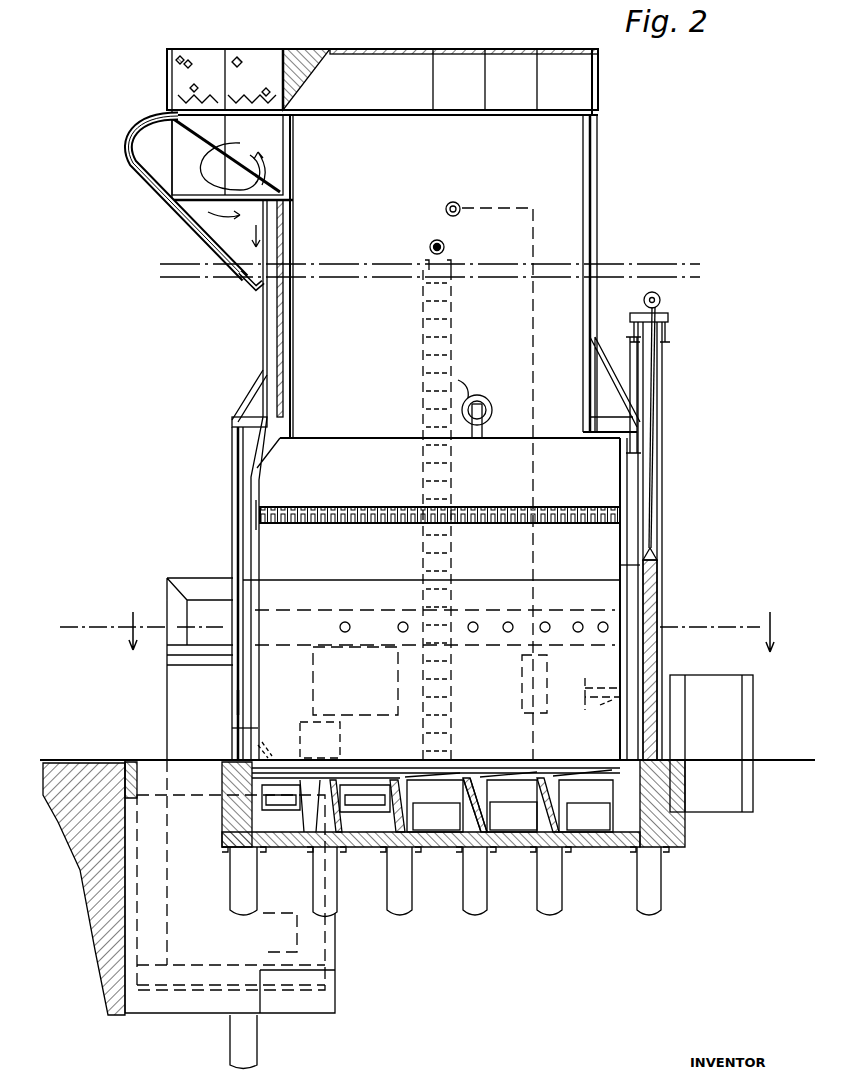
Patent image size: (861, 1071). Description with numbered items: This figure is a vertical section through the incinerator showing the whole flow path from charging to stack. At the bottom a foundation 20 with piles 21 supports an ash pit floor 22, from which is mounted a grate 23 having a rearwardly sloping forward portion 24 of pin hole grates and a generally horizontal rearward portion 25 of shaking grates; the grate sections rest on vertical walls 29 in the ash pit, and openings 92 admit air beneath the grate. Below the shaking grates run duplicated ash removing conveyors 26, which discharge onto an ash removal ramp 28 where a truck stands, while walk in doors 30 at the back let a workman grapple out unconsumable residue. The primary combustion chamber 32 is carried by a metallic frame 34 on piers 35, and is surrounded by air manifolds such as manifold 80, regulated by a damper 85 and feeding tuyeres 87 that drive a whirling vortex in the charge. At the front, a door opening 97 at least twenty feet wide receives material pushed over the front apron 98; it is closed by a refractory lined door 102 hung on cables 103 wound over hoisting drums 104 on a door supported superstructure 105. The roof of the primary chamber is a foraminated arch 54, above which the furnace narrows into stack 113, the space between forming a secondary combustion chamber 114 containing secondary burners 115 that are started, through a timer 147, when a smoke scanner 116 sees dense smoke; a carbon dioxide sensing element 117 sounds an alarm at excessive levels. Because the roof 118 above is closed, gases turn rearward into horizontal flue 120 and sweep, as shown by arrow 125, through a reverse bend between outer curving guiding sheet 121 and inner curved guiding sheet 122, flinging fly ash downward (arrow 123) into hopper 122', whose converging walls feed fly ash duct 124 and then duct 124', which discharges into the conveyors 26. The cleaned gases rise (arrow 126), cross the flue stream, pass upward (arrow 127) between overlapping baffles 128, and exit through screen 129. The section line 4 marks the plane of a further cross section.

The roof 118 is at (572, 88).
The baffles 128 is at (197, 79).
The arrow 127 is at (252, 80).
The screen 129 is at (196, 30).
The arrow 126 is at (267, 172).
The horizontal flue 120 is at (290, 155).
The arrow 123 is at (260, 235).
The arrow 125 is at (240, 228).
The outer curving guiding sheet 121 is at (150, 170).
The inner curved guiding sheet 122 is at (158, 197).
The hopper 122' is at (224, 292).
The section line 4- 4 is at (424, 622).
The stack 113 is at (296, 390).
The fly ash duct 124 is at (230, 480).
The duct 124' is at (213, 515).
The carbon dioxide sensing element 117 is at (459, 205).
The smoke scanner 116 is at (444, 244).
The secondary burners 115 is at (490, 412).
The cables 103 is at (652, 474).
The hoisting drums 104 is at (660, 298).
The door supported superstructure 105 is at (666, 320).
The refractory lined door 102 is at (652, 593).
The secondary combustion chamber 114 is at (435, 599).
The foraminated arch 54 is at (505, 507).
The tuyeres 87 is at (476, 624).
The primary combustion chamber 32 is at (400, 681).
The door opening 97 is at (617, 676).
The timer 147 is at (576, 714).
The air manifold 80 is at (195, 593).
The damper 85 is at (185, 667).
The walk in doors 30 is at (240, 702).
The metallic frame 34 is at (240, 728).
The front apron 98 is at (783, 758).
The foundation 20 is at (688, 828).
The piers 35 is at (222, 794).
The forward portion 24 is at (535, 777).
The grate 23 is at (456, 779).
The vertical walls 29 is at (575, 790).
The openings 92 is at (511, 816).
The rearward portion 25 is at (360, 787).
The ash removing conveyors 26 is at (384, 790).
The ash pit floor 22 is at (610, 852).
The piles 21 is at (545, 912).
The ash removal ramp 28 is at (185, 1010).